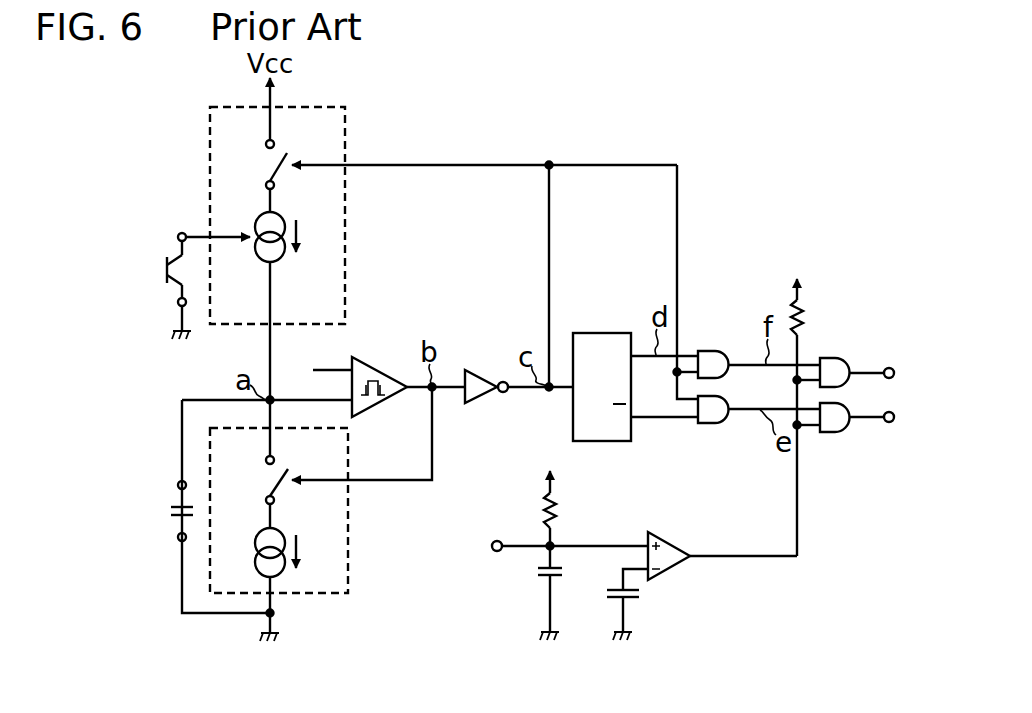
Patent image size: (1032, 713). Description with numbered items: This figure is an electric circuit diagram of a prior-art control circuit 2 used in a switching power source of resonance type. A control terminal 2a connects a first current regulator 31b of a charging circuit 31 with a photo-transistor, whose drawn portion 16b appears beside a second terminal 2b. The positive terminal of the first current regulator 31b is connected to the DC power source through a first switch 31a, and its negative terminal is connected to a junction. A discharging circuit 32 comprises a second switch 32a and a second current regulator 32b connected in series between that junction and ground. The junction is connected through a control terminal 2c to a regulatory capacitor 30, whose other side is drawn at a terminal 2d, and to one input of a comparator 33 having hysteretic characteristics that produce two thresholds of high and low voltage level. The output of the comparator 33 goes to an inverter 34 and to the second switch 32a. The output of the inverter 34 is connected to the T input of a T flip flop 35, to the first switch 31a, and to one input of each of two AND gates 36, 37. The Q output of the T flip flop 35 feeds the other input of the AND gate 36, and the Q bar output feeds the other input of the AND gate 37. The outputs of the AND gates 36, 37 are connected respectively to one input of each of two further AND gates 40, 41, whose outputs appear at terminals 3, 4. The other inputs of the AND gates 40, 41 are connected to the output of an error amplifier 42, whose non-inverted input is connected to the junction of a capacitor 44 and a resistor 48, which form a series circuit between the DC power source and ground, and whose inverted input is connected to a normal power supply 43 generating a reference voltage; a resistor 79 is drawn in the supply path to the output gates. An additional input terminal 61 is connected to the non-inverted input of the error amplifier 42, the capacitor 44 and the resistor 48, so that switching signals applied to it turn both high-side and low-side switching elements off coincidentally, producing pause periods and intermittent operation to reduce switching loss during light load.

The control circuit 2 is at (795, 122).
The control terminal 2a is at (178, 237).
The second input terminal 2b is at (178, 304).
The control terminal 2c is at (179, 483).
The capacitor terminal 2d is at (180, 541).
The output terminal 3 is at (903, 373).
The output terminal 4 is at (903, 417).
The transistor 16b is at (167, 268).
The regulatory capacitor 30 is at (171, 510).
The charging circuit 31 is at (211, 122).
The first switch 31a is at (287, 160).
The first current regulator 31b is at (286, 218).
The discharging circuit 32 is at (349, 562).
The second switch 32a is at (286, 483).
The second current regulator 32b is at (286, 540).
The comparator 33 is at (378, 357).
The inverter 34 is at (471, 368).
The T flip flop 35 is at (588, 337).
The AND gate 36 is at (716, 358).
The AND gate 37 is at (718, 418).
The AND gate 40 is at (860, 365).
The AND gate 41 is at (862, 430).
The error amplifier 42 is at (684, 563).
The normal power supply 43 is at (638, 600).
The capacitor 44 is at (535, 576).
The resistor 48 is at (557, 512).
The additional input terminal 61 is at (496, 541).
The resistor 79 is at (806, 312).